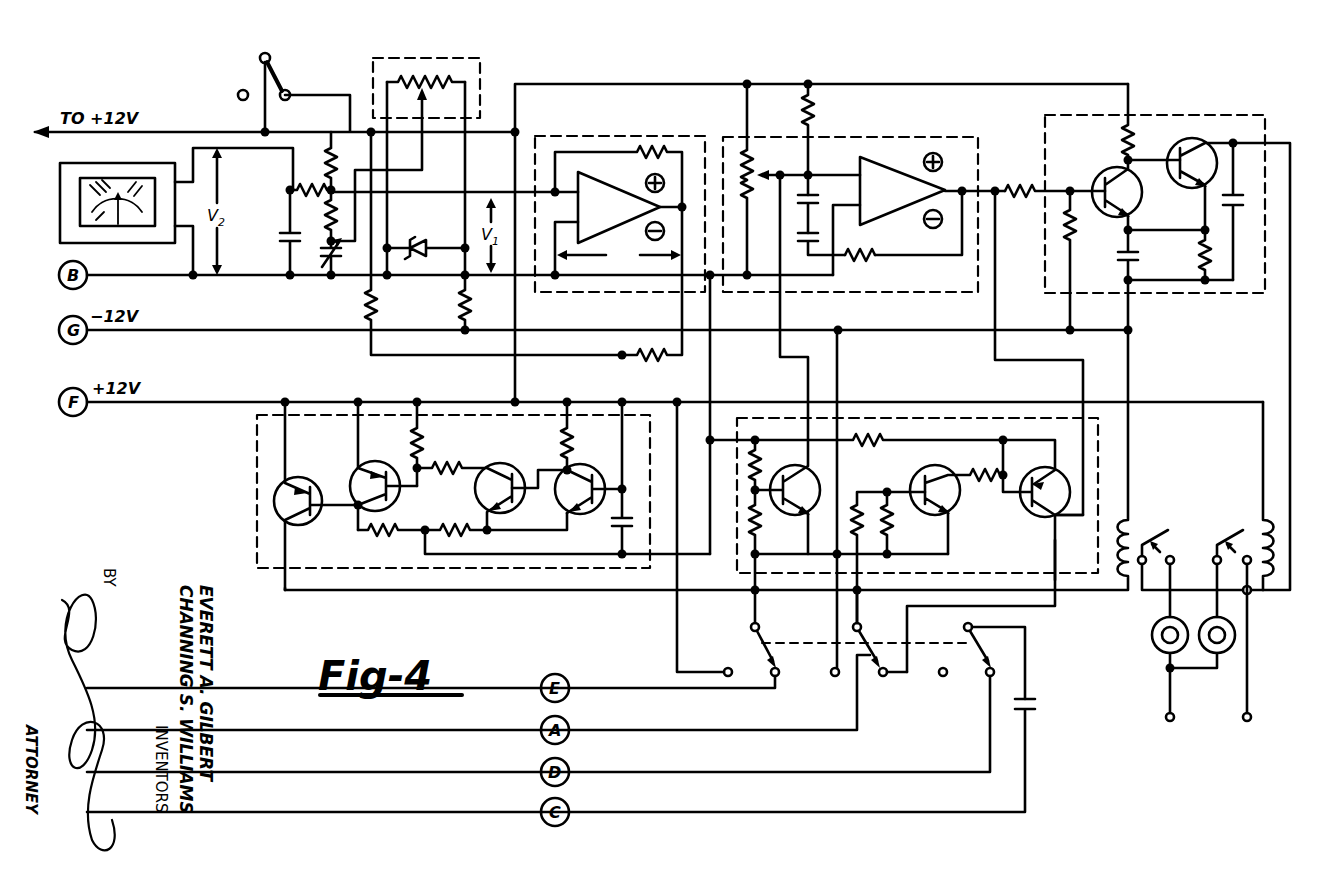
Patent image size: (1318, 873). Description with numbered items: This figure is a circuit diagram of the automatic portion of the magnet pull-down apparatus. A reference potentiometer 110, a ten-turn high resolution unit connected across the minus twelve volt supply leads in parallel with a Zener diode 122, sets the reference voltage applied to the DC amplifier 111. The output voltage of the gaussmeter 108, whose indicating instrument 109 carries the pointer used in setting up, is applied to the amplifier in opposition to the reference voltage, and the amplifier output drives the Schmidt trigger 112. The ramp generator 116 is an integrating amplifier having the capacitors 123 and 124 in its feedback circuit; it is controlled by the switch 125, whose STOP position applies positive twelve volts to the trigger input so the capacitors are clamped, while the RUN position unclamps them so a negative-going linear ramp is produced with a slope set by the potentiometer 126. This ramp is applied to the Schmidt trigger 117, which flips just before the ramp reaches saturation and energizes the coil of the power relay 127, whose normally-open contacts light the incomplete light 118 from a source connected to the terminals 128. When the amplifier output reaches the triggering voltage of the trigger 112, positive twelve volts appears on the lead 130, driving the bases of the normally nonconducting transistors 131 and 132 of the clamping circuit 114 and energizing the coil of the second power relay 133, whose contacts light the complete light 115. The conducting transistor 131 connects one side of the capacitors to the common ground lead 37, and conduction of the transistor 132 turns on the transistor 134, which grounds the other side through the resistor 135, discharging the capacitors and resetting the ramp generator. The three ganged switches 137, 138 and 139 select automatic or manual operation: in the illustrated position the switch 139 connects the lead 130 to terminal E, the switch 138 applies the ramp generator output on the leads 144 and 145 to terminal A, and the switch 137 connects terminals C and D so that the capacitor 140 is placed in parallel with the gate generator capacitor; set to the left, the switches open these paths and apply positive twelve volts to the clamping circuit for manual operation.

The common ground lead 37 is at (544, 547).
The gaussmeter 108 is at (117, 191).
The indicating instrument 109 is at (117, 223).
The reference potentiometer 110 is at (412, 132).
The DC amplifier 111 is at (620, 233).
The Schmidt trigger 112 is at (425, 496).
The clamping circuit 114 is at (904, 471).
The complete light 115 is at (1154, 638).
The ramp generator 116 is at (864, 188).
The Schmidt trigger 117 is at (1167, 333).
The incomplete light 118 is at (1232, 616).
The Zener diode 122 is at (426, 229).
The capacitor 123 is at (828, 187).
The capacitor 124 is at (821, 277).
The switch 125 is at (254, 64).
The potentiometer 126 is at (780, 179).
The power relay 127 is at (1243, 496).
The terminals 128 is at (1232, 701).
The lead 130 is at (269, 604).
The transistor 131 is at (787, 367).
The transistor 132 is at (944, 503).
The power relay 133 is at (730, 435).
The transistor 134 is at (995, 556).
The resistor 135 is at (885, 245).
The ganged switch 137 is at (556, 697).
The ganged switch 138 is at (497, 660).
The ganged switch 139 is at (526, 545).
The capacitor 140 is at (581, 738).
The lead 144 is at (1035, 353).
The lead 145 is at (1027, 560).